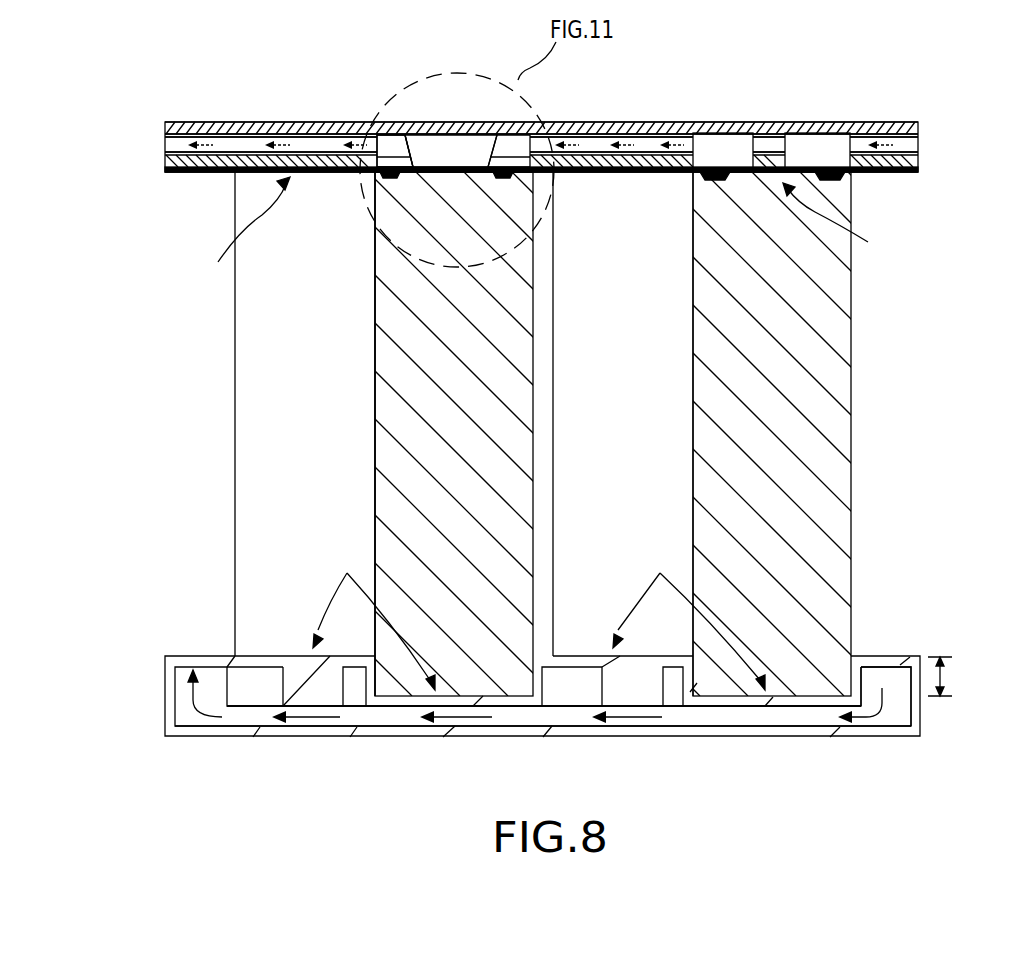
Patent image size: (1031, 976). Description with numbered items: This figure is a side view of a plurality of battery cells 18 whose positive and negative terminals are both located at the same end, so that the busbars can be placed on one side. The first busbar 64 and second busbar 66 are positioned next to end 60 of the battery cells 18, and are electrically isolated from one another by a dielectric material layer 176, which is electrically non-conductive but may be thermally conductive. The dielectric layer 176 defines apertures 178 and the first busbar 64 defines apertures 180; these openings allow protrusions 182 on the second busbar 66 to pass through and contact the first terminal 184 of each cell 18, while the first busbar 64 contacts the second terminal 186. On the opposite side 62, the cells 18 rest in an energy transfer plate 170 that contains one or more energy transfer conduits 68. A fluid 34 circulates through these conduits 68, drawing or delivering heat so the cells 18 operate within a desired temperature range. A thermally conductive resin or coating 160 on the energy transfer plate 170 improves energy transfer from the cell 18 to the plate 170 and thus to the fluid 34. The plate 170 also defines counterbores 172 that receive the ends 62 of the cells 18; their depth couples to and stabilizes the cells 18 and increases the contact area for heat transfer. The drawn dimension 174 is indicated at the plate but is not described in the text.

The battery cell 18 is at (630, 200).
The fluid 34 is at (890, 148).
The end 60 is at (542, 229).
The opposite side 62 is at (539, 614).
The first busbar 64 is at (195, 175).
The second busbar 66 is at (190, 124).
The energy transfer conduit 68 is at (918, 146).
The thermally conductive resin or coating 160 is at (500, 692).
The energy transfer plate 170 is at (165, 728).
The counterbore 172 is at (817, 690).
The wall height 174 is at (945, 688).
The dielectric material layer 176 is at (185, 146).
The aperture 178 is at (412, 160).
The aperture 180 is at (410, 152).
The protrusion 182 is at (460, 152).
The first terminal 184 is at (448, 172).
The second terminal 186 is at (390, 178).